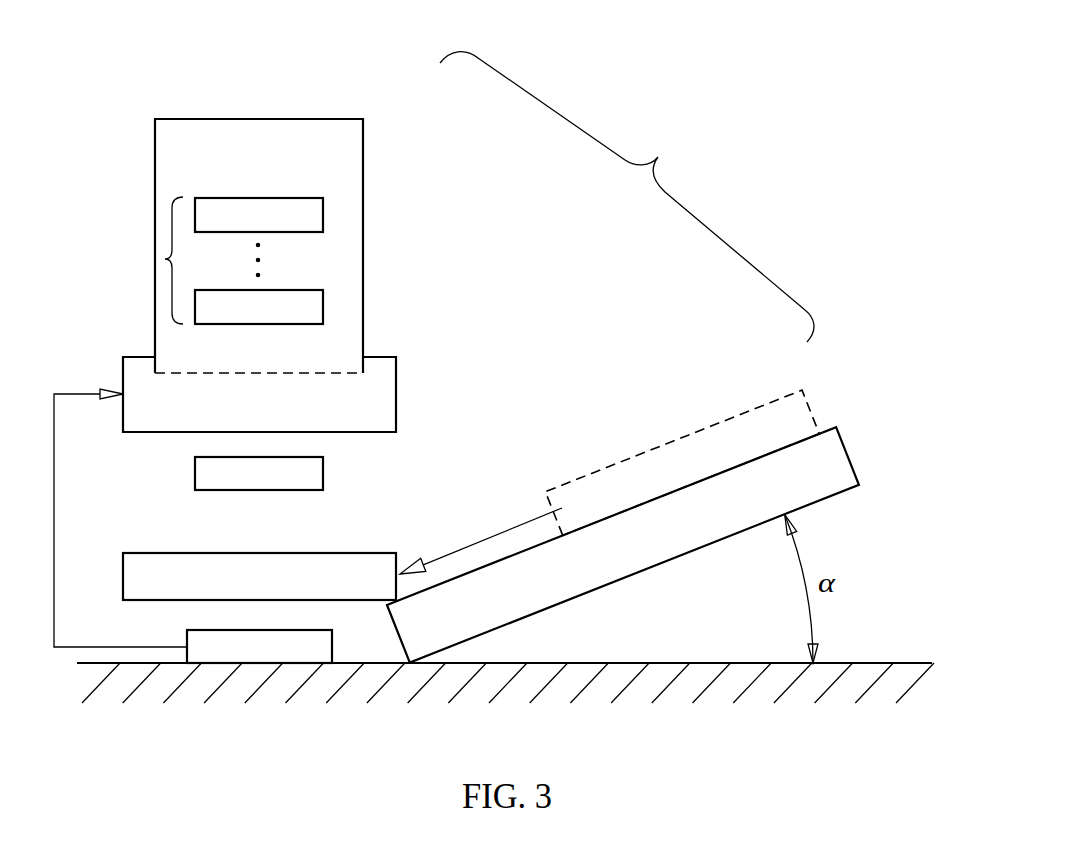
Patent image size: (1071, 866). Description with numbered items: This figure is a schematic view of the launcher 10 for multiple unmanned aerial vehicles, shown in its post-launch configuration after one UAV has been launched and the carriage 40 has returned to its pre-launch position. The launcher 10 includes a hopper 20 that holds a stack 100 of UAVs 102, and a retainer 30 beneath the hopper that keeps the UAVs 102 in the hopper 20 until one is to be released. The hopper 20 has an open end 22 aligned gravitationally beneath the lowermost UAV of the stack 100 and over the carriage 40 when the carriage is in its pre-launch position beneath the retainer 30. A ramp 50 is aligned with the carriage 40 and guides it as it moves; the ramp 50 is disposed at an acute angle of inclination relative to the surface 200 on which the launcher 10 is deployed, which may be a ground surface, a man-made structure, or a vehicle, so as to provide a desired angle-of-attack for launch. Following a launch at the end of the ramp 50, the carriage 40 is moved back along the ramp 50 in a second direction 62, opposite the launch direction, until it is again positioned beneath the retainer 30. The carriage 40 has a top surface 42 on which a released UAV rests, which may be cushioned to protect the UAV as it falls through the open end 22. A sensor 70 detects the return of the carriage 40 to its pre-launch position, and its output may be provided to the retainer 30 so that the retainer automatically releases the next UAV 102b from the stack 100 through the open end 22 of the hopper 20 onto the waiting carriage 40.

The launcher 10 is at (627, 197).
The hopper 20 is at (155, 158).
The open end 22 is at (325, 370).
The retainer 30 is at (123, 366).
The carriage 40 is at (122, 580).
The top surface 42 is at (153, 552).
The ramp 50 is at (692, 540).
The second direction 62 is at (460, 550).
The sensor 70 is at (185, 637).
The stack 100 is at (166, 259).
The UAVs 102 is at (323, 215).
The next released UAV 102b is at (323, 473).
The surface 200 is at (905, 663).